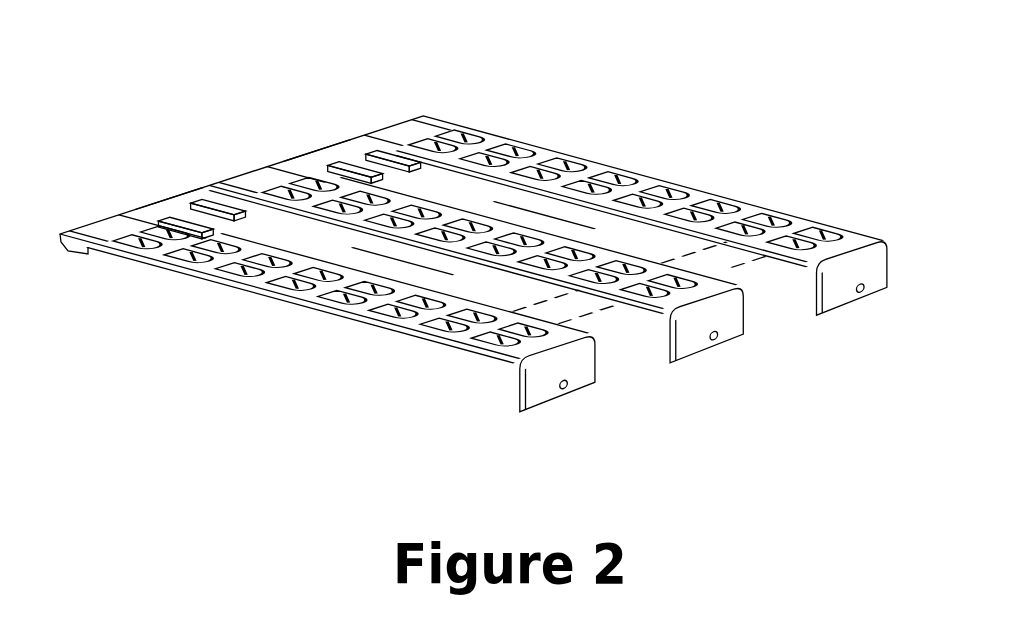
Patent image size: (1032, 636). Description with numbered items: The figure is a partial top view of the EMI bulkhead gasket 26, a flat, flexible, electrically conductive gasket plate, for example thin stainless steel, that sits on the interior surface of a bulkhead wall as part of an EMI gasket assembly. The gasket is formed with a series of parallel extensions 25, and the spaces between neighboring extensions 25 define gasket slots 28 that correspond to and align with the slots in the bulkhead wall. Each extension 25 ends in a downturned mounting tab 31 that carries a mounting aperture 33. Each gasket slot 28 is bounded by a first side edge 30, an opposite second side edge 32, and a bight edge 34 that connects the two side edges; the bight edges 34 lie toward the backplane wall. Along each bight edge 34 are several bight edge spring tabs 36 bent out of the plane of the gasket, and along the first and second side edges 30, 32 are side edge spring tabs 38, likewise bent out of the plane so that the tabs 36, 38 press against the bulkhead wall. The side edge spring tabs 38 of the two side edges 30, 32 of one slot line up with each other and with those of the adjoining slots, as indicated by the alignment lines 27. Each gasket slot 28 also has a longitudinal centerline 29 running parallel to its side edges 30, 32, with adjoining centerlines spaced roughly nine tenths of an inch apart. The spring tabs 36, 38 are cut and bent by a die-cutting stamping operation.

The extension 25 is at (745, 215).
The EMI bulkhead gasket 26 is at (430, 127).
The alignment lines 27 is at (463, 355).
The gasket slot 28 is at (775, 266).
The longitudinal centerline 29 is at (595, 231).
The first side edge 30 is at (488, 140).
The mounting tab 31 is at (880, 278).
The second side edge 32 is at (450, 155).
The mounting aperture 33 is at (860, 292).
The bight edge 34 is at (327, 153).
The bight edge spring tabs 36 is at (378, 168).
The side edge spring tabs 38 is at (620, 183).